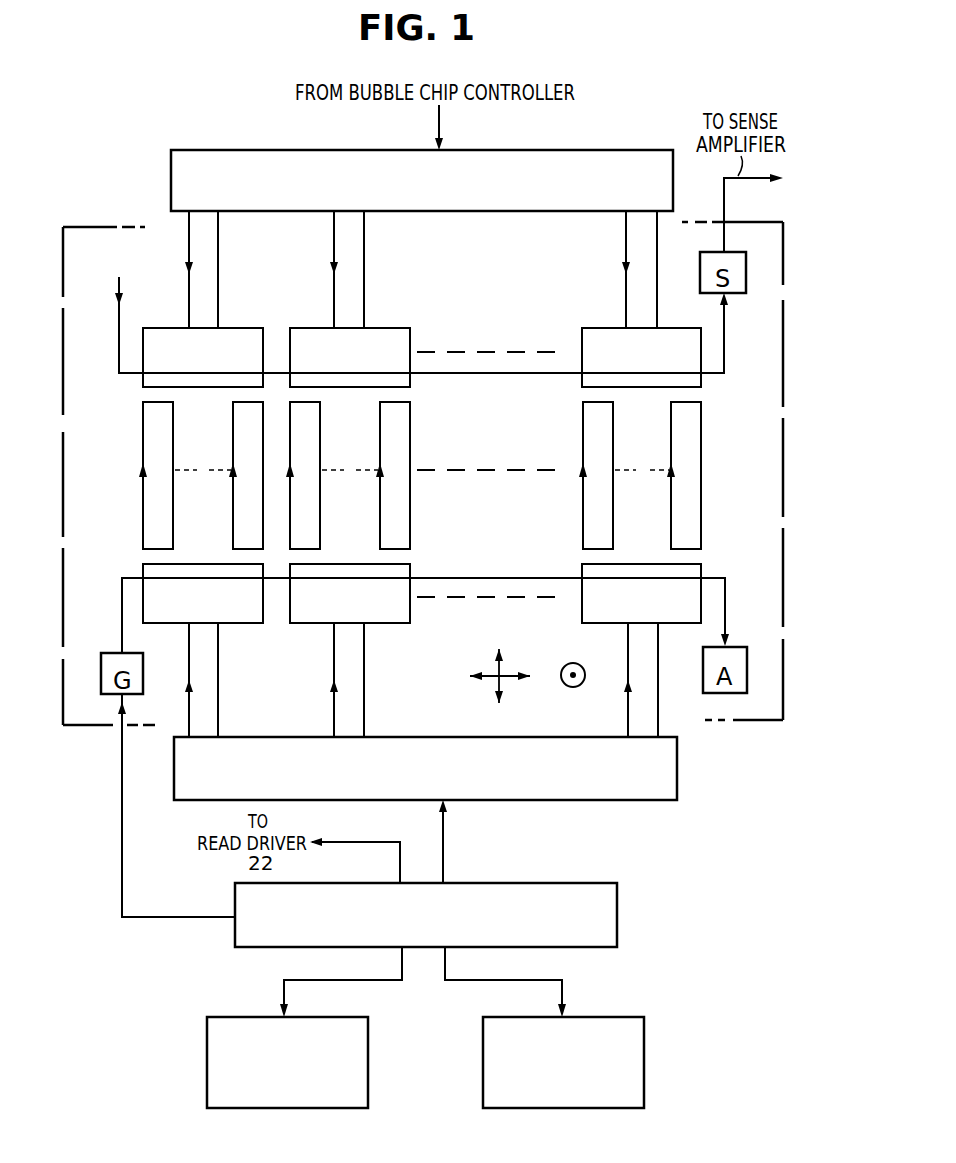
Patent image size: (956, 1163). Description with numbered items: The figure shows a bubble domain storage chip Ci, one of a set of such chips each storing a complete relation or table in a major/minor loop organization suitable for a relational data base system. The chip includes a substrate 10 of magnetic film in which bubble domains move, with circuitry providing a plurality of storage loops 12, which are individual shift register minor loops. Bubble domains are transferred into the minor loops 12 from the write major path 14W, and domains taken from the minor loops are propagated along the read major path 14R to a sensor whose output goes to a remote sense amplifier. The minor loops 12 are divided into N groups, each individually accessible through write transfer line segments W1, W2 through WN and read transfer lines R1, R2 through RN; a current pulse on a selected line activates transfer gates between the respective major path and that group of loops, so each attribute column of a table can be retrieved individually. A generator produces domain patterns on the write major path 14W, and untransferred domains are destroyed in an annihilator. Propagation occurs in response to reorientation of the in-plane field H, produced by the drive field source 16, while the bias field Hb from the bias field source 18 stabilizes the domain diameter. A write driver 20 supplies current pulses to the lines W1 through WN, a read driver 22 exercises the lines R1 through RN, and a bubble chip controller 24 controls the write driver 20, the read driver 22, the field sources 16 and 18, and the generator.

The substrate 10 is at (105, 225).
The storage loops 12 is at (173, 536).
The read major path 14R is at (487, 373).
The write major path 14W is at (483, 577).
The drive field source 16 is at (368, 1063).
The bias field source 18 is at (644, 1063).
The write driver 20 is at (677, 760).
The read driver 22 is at (207, 150).
The bubble chip controller 24 is at (617, 912).
The read transfer line R1 is at (218, 263).
The read transfer line R2 is at (364, 263).
The read transfer line RN is at (626, 245).
The write transfer line W1 is at (218, 686).
The write transfer line W2 is at (364, 686).
The write transfer line WN is at (628, 647).
The reorienting magnetic field H is at (530, 660).
The bias field Hb is at (583, 685).
The bubble domain storage chip Ci is at (708, 809).